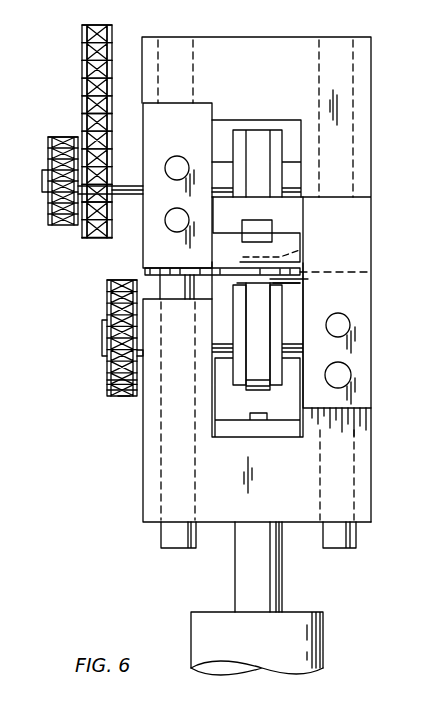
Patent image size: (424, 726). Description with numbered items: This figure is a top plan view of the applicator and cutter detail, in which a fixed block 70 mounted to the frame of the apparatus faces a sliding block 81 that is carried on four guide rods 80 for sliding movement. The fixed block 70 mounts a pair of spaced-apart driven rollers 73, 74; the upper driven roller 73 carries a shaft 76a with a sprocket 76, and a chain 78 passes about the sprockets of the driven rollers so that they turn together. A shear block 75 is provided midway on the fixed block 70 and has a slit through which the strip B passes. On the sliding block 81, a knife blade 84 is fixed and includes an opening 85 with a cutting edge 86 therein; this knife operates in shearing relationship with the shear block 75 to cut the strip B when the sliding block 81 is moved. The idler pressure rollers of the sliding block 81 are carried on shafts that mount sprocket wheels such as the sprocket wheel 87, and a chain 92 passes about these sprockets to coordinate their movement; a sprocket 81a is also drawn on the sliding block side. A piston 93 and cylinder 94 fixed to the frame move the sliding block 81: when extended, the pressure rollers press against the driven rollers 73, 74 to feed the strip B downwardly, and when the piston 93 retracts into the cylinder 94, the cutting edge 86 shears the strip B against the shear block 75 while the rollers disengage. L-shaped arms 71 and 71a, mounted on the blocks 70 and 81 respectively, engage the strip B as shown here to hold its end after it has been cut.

The fixed block 70 is at (363, 36).
The L-shaped arm 71 is at (203, 118).
The L-shaped arm 71a is at (380, 382).
The driven roller 73 is at (276, 140).
The driven roller 74 is at (262, 345).
The shear block 75 is at (143, 270).
The sprocket 76 is at (82, 232).
The shaft 76a is at (125, 175).
The chain 78 is at (88, 75).
The guide rods 80 is at (175, 548).
The sliding block 81 is at (136, 498).
The sprocket 81a is at (103, 338).
The knife blade 84 is at (290, 292).
The opening 85 is at (306, 279).
The cutting edge 86 is at (300, 258).
The sprocket wheel 87 is at (106, 385).
The chain 92 is at (126, 396).
The piston 93 is at (258, 596).
The cylinder 94 is at (300, 653).
The strip B is at (272, 232).